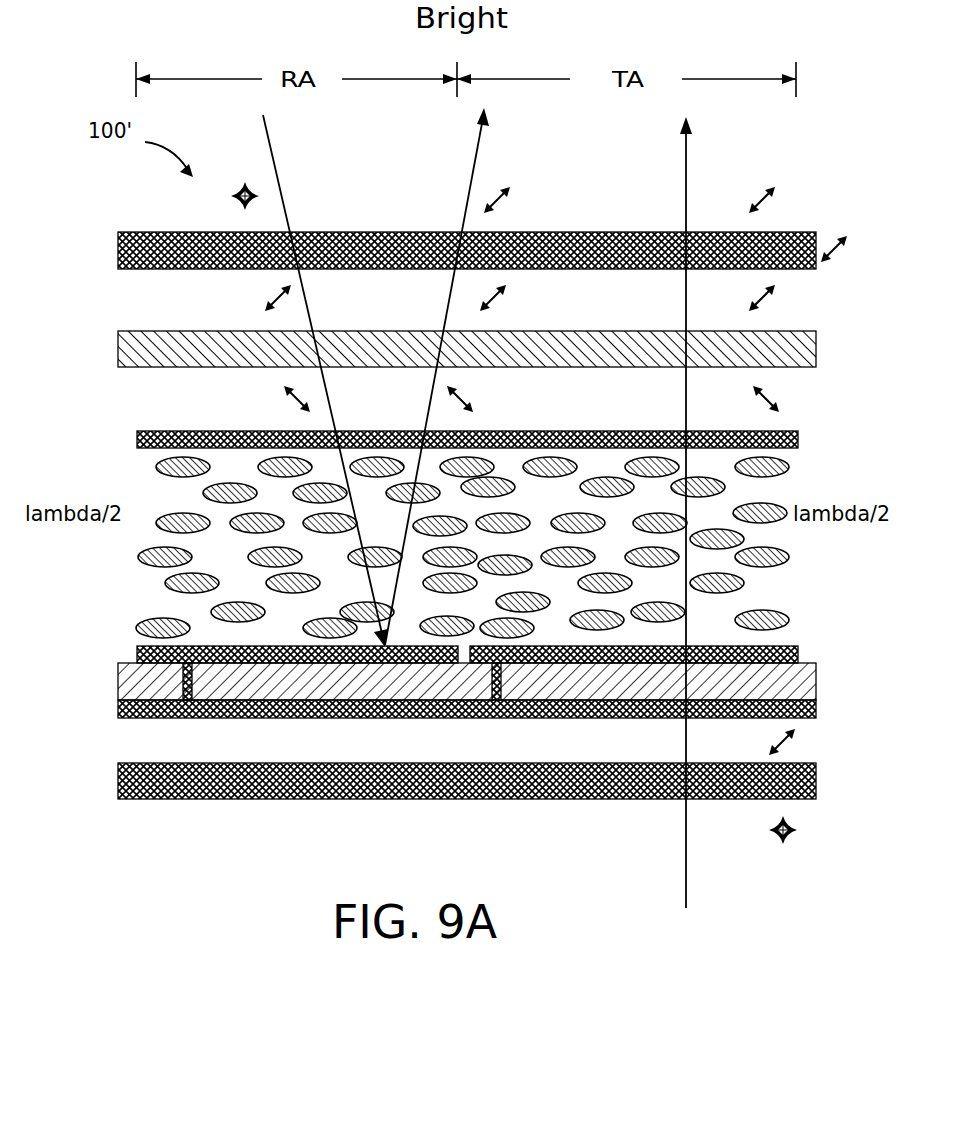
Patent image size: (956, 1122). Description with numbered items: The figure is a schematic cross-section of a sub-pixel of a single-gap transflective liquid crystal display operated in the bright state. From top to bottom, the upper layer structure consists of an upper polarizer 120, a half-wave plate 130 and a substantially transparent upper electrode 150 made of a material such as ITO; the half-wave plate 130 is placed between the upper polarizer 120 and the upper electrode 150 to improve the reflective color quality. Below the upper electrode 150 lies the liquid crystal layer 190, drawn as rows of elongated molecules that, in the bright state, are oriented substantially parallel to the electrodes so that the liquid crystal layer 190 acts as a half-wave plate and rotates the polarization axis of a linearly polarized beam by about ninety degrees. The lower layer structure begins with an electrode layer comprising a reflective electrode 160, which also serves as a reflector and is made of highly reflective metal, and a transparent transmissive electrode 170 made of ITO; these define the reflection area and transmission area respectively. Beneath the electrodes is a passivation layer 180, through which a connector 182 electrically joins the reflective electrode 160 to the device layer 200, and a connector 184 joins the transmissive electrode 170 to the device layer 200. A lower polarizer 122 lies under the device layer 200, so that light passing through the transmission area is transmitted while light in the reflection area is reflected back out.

The polarizer 120 is at (118, 250).
The half-wave plate 130 is at (118, 357).
The upper electrode 150 is at (137, 440).
The liquid crystal layer 190 is at (116, 565).
The reflective electrode 160 is at (137, 654).
The transmissive electrode 170 is at (798, 654).
The passivation layer 180 is at (118, 690).
The connector 182 is at (192, 680).
The connector 184 is at (501, 680).
The device layer 200 is at (118, 708).
The polarizer 122 is at (118, 781).